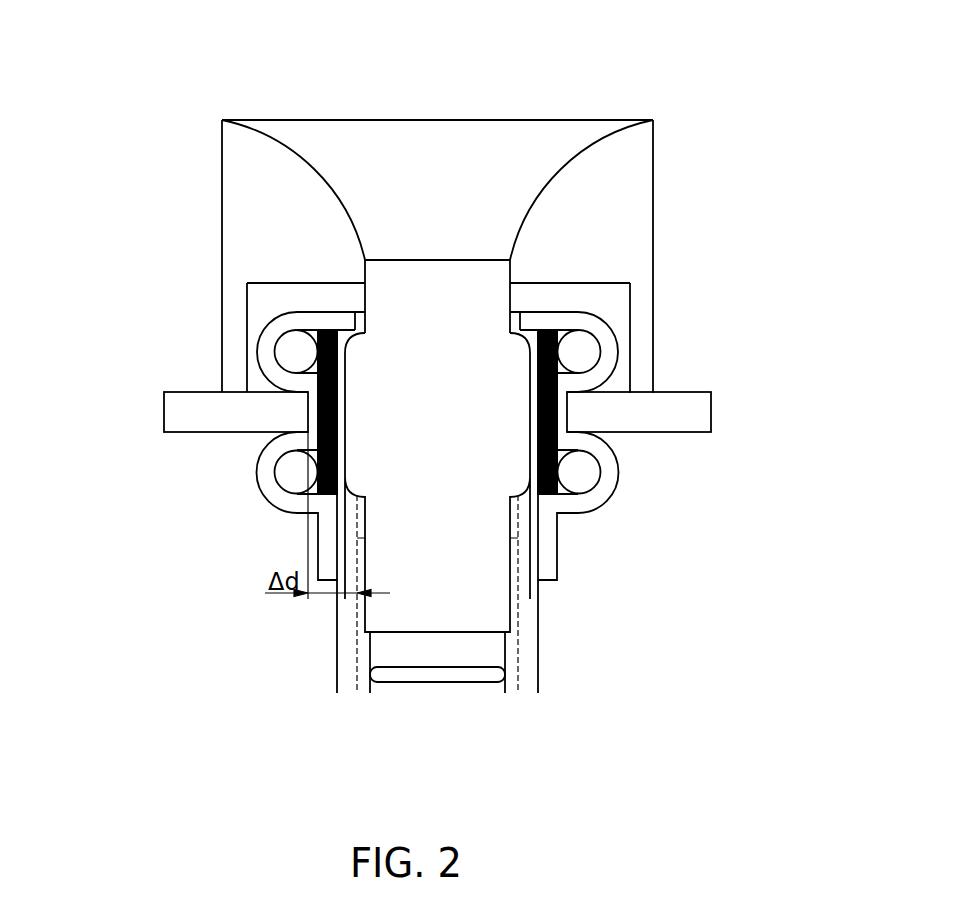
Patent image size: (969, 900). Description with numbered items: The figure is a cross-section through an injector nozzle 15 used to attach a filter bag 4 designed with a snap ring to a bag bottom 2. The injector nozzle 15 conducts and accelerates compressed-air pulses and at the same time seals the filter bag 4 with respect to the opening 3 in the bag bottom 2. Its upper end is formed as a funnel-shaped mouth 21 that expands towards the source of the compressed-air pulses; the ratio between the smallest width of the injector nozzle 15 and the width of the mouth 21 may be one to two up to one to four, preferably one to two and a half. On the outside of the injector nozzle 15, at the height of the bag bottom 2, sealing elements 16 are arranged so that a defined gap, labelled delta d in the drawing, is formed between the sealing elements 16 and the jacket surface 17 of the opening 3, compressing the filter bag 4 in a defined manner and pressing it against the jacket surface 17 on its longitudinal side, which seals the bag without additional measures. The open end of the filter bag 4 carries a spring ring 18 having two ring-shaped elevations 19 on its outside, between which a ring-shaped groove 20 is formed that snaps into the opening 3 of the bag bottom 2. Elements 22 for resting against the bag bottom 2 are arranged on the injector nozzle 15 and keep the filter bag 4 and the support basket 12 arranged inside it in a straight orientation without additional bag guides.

The bag bottom 2 is at (183, 413).
The opening 3 is at (308, 393).
The filter bag 4 is at (336, 652).
The support basket 12 is at (513, 660).
The injector nozzle 15 is at (443, 153).
The sealing elements 16 is at (318, 430).
The jacket surface 17 is at (345, 412).
The spring ring 18 is at (573, 332).
The ring-shaped elevations 19 is at (580, 352).
The ring-shaped groove 20 is at (562, 412).
The funnel-shaped mouth 21 is at (582, 153).
The elements for resting against the bag bottom 22 is at (642, 307).